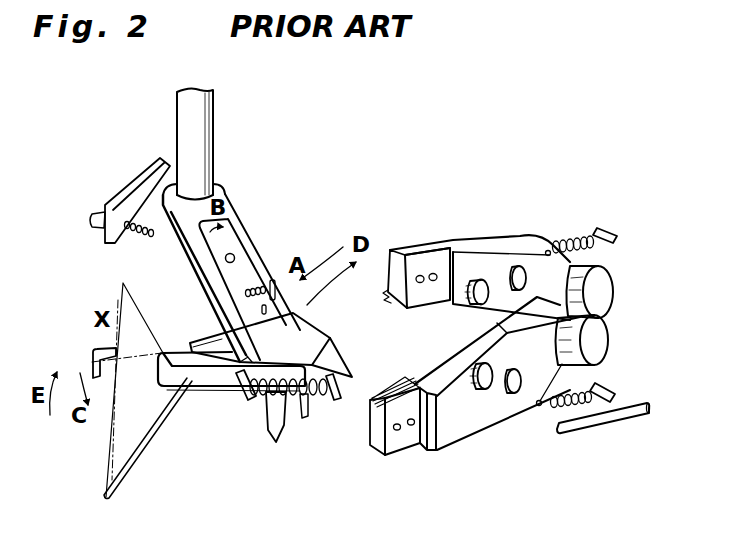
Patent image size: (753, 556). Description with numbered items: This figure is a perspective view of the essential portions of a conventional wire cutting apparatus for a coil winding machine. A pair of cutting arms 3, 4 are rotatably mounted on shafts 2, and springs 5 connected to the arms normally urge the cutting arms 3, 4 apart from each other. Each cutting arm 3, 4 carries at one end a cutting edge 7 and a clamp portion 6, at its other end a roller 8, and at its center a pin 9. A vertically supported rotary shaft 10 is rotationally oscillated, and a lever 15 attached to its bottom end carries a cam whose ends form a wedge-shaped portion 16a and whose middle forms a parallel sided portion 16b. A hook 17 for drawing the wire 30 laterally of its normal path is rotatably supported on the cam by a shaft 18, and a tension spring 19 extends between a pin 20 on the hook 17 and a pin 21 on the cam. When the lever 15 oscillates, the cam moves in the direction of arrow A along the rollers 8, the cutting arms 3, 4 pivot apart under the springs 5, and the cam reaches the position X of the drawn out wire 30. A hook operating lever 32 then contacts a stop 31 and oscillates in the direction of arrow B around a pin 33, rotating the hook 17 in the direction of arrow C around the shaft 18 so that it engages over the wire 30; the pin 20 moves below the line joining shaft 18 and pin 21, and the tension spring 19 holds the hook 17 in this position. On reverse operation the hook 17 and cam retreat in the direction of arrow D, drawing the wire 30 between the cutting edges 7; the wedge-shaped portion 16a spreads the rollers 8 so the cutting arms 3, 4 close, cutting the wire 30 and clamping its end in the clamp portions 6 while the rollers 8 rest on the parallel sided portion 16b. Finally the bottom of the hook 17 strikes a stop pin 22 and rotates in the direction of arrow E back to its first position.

The shaft 2 is at (517, 270).
The cutting arm 3 is at (432, 248).
The cutting arm 4 is at (455, 430).
The spring 5 is at (577, 240).
The clamp portion 6 is at (388, 296).
The cutting edge 7 is at (390, 250).
The roller 8 is at (602, 296).
The pin 9 is at (483, 285).
The rotary shaft 10 is at (213, 110).
The lever 15 is at (183, 265).
The wedge-shaped portion 16a is at (327, 352).
The parallel sided portion 16b is at (288, 338).
The hook 17 is at (200, 373).
The shaft 18 is at (281, 412).
The tension spring 19 is at (312, 400).
The pin 20 is at (240, 405).
The pin 21 is at (340, 416).
The stop pin 22 is at (618, 425).
The wire 30 is at (120, 478).
The stop 31 is at (140, 240).
The hook operating lever 32 is at (227, 240).
The pin 33 is at (234, 255).